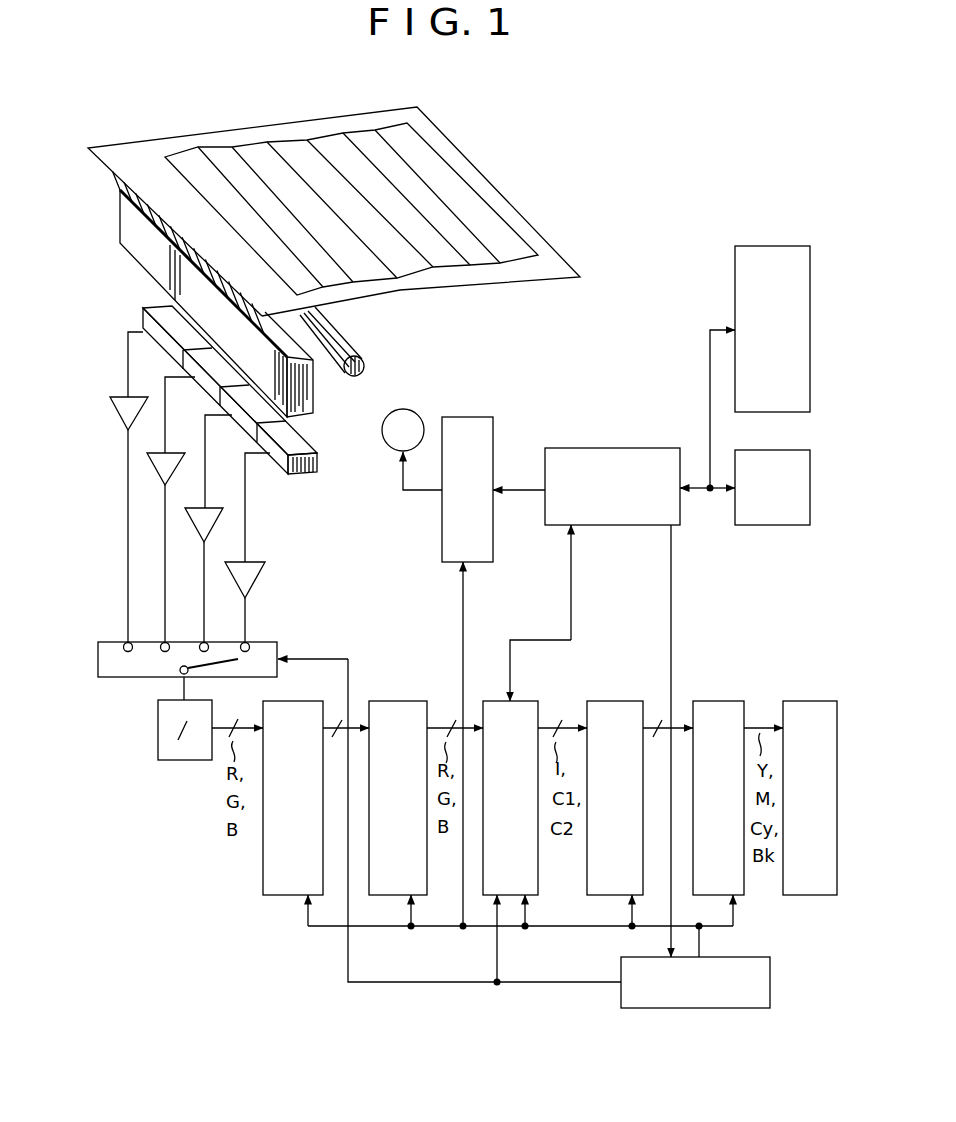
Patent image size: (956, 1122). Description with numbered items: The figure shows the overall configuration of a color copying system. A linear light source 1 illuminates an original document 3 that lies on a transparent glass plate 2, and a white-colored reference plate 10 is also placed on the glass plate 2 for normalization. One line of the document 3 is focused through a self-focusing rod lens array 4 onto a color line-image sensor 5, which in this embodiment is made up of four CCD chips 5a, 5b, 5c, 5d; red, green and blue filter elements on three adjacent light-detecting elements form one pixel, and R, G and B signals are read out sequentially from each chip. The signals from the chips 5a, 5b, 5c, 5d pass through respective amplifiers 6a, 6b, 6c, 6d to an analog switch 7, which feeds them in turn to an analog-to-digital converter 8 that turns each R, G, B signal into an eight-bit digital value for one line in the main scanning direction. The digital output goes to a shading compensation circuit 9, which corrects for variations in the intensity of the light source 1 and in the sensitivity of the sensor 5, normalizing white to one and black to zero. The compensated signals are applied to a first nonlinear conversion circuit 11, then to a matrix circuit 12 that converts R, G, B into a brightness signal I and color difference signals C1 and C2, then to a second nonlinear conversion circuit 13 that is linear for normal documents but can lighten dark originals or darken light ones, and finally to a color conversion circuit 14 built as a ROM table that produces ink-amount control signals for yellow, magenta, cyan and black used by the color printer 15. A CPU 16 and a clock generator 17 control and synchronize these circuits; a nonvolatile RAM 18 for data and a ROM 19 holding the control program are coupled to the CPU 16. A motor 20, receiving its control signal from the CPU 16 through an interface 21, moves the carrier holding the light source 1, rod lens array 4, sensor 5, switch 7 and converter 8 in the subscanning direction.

The linear light source 1 is at (363, 358).
The transparent glass plate 2 is at (533, 228).
The original document 3 is at (458, 195).
The self-focusing rod lens array 4 is at (313, 392).
The color line-image sensor 5 is at (318, 463).
The CCD chip 5a is at (277, 468).
The CCD chip 5b is at (255, 430).
The CCD chip 5c is at (218, 390).
The CCD chip 5d is at (180, 353).
The amplifier 6a is at (257, 578).
The amplifier 6b is at (197, 528).
The amplifier 6c is at (157, 470).
The amplifier 6d is at (118, 413).
The analog switch 7 is at (279, 643).
The analog-to-digital converter 8 is at (158, 747).
The shading compensation circuit 9 is at (278, 896).
The white-colored reference plate 10 is at (89, 148).
The first nonlinear conversion circuit 11 is at (383, 896).
The matrix circuit 12 is at (547, 906).
The second nonlinear conversion circuit 13 is at (600, 896).
The color conversion circuit 14 is at (746, 893).
The color printer 15 is at (790, 896).
The CPU 16 is at (613, 448).
The clock generator 17 is at (772, 988).
The nonvolatile RAM 18 is at (735, 273).
The ROM 19 is at (775, 525).
The motor 20 is at (402, 409).
The interface 21 is at (442, 530).